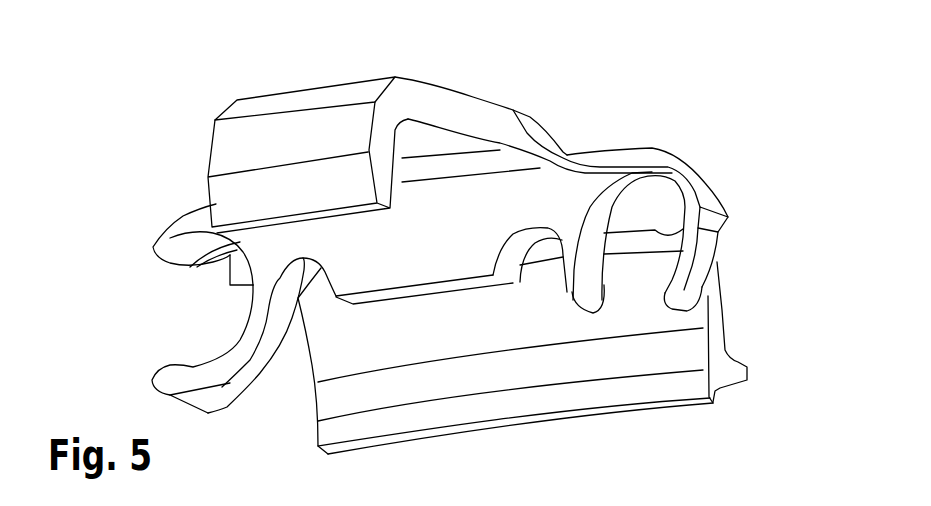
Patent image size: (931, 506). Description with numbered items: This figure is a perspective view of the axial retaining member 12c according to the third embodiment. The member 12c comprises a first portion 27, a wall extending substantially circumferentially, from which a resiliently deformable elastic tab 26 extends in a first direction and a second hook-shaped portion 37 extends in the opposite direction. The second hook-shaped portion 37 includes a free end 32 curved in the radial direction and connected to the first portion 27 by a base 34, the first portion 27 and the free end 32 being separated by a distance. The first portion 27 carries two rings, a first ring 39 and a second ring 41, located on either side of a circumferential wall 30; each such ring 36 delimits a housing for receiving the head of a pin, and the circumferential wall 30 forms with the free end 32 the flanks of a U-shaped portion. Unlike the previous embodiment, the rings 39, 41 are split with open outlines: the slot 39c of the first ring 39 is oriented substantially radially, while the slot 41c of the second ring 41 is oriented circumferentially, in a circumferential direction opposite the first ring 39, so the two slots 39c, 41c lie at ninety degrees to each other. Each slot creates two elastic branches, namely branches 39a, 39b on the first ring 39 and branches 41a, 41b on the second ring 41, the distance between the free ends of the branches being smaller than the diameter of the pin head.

The axial retaining member 12c is at (708, 151).
The resiliently deformable tab 26 is at (725, 311).
The first portion 27 is at (604, 138).
The circumferential wall 30 is at (448, 248).
The free end 32 is at (250, 141).
The base 34 is at (457, 120).
The ring 36 is at (634, 4).
The second hook-shaped portion 37 is at (220, 99).
The first ring 39 is at (729, 191).
The elastic branch 39a is at (700, 277).
The elastic branch 39b is at (570, 283).
The slot 39c is at (623, 293).
The second ring 41 is at (264, 385).
The elastic branch 41a is at (213, 373).
The elastic branch 41b is at (152, 246).
The slot 41c is at (193, 320).